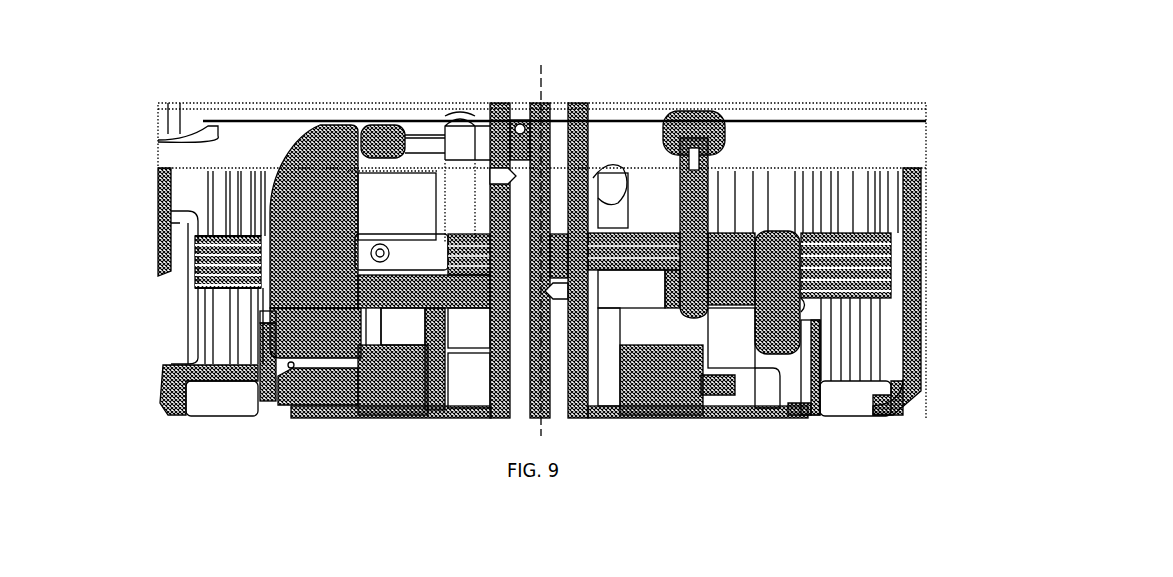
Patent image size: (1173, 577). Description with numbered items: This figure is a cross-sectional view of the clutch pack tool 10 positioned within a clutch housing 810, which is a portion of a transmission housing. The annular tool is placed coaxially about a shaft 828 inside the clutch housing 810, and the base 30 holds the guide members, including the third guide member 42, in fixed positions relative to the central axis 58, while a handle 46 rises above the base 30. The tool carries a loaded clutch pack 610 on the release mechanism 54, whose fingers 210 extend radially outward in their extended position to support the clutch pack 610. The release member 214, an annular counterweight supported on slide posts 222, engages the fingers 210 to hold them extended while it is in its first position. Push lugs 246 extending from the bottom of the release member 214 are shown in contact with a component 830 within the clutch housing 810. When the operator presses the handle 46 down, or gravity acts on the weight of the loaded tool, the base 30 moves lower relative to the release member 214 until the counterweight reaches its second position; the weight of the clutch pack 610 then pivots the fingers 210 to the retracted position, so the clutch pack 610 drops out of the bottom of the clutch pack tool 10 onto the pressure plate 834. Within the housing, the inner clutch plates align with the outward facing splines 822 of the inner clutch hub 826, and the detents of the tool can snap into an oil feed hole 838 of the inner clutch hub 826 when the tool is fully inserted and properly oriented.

The clutch pack tool 10 is at (323, 92).
The base 30 is at (773, 400).
The third guide member 42 is at (273, 140).
The handle 46 is at (408, 122).
The release mechanism 54 is at (652, 212).
The central axis 58 is at (545, 68).
The fingers 210 is at (813, 287).
The release member 214 is at (718, 270).
The slide posts 222 is at (692, 212).
The push lugs 246 is at (383, 320).
The clutch pack 610 is at (838, 220).
The clutch housing 810 is at (150, 242).
The splines 822 is at (800, 333).
The inner clutch hub 826 is at (800, 402).
The shaft 828 is at (572, 100).
The component 830 is at (345, 352).
The pressure plate 834 is at (222, 398).
The oil feed hole 838 is at (283, 362).